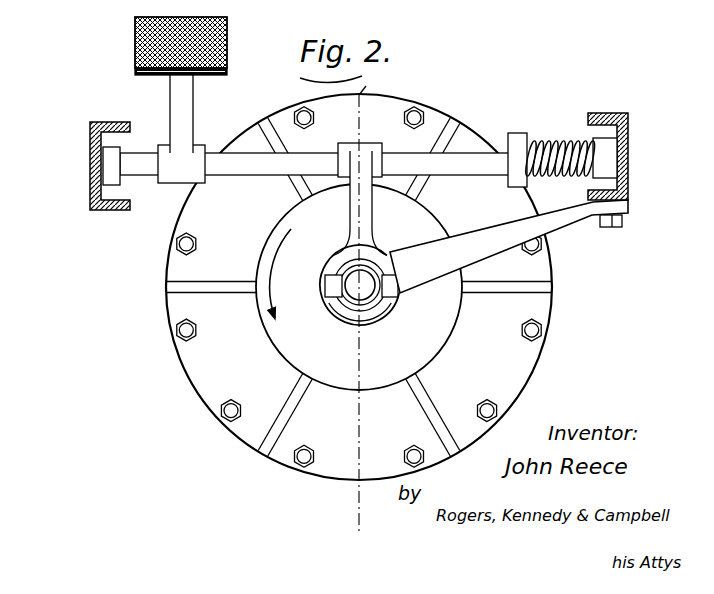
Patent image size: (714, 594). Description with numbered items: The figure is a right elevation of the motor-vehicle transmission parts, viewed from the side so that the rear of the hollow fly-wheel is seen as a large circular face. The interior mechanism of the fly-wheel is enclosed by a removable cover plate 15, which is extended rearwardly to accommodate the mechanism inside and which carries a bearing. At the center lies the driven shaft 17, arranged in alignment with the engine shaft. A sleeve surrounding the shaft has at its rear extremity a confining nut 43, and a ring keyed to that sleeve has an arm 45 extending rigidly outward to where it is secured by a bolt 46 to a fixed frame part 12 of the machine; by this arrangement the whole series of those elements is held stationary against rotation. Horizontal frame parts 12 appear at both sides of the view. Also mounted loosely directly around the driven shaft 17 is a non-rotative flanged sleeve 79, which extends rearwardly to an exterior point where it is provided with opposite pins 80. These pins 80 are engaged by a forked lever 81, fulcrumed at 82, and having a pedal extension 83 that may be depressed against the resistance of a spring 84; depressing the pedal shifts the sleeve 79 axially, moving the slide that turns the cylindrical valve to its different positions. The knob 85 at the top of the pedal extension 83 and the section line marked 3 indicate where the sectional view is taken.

The frame part 12 is at (90, 133).
The cover plate 15 is at (359, 287).
The driven shaft 17 is at (388, 311).
The confining nut 43 is at (350, 323).
The arm 45 is at (456, 266).
The bolt 46 is at (612, 228).
The flanged sleeve 79 is at (352, 268).
The pins 80 is at (398, 292).
The forked lever 81 is at (372, 221).
The fulcrum 82 is at (315, 164).
The pedal extension 83 is at (191, 129).
The spring 84 is at (562, 152).
The knob 85 is at (227, 34).
The section line 3- 3 is at (372, 108).